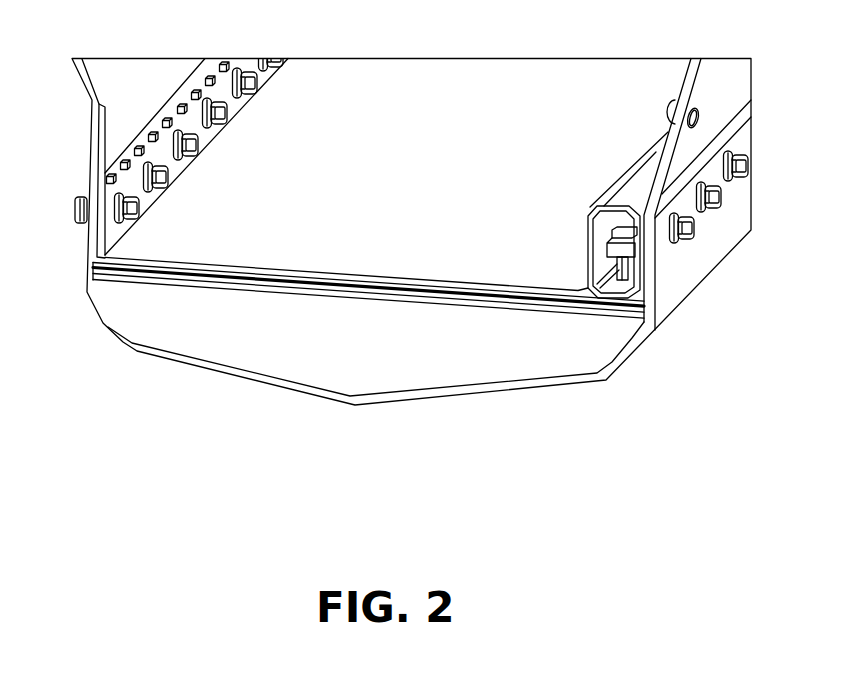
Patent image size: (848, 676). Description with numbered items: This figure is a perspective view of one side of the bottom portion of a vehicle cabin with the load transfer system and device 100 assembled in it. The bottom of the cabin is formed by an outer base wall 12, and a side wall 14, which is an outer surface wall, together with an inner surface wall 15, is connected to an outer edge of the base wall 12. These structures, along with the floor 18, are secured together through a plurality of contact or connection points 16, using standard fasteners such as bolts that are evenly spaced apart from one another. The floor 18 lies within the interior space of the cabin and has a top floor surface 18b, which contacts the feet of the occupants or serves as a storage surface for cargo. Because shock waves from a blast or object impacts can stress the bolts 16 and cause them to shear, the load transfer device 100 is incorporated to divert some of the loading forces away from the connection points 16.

The outer base wall 12 is at (307, 393).
The outer side wall 14 is at (728, 85).
The inner side wall 15 is at (91, 118).
The connection points 16 is at (720, 197).
The floor 18 is at (227, 233).
The top floor surface 18b is at (278, 246).
The load transfer device 100 is at (562, 242).